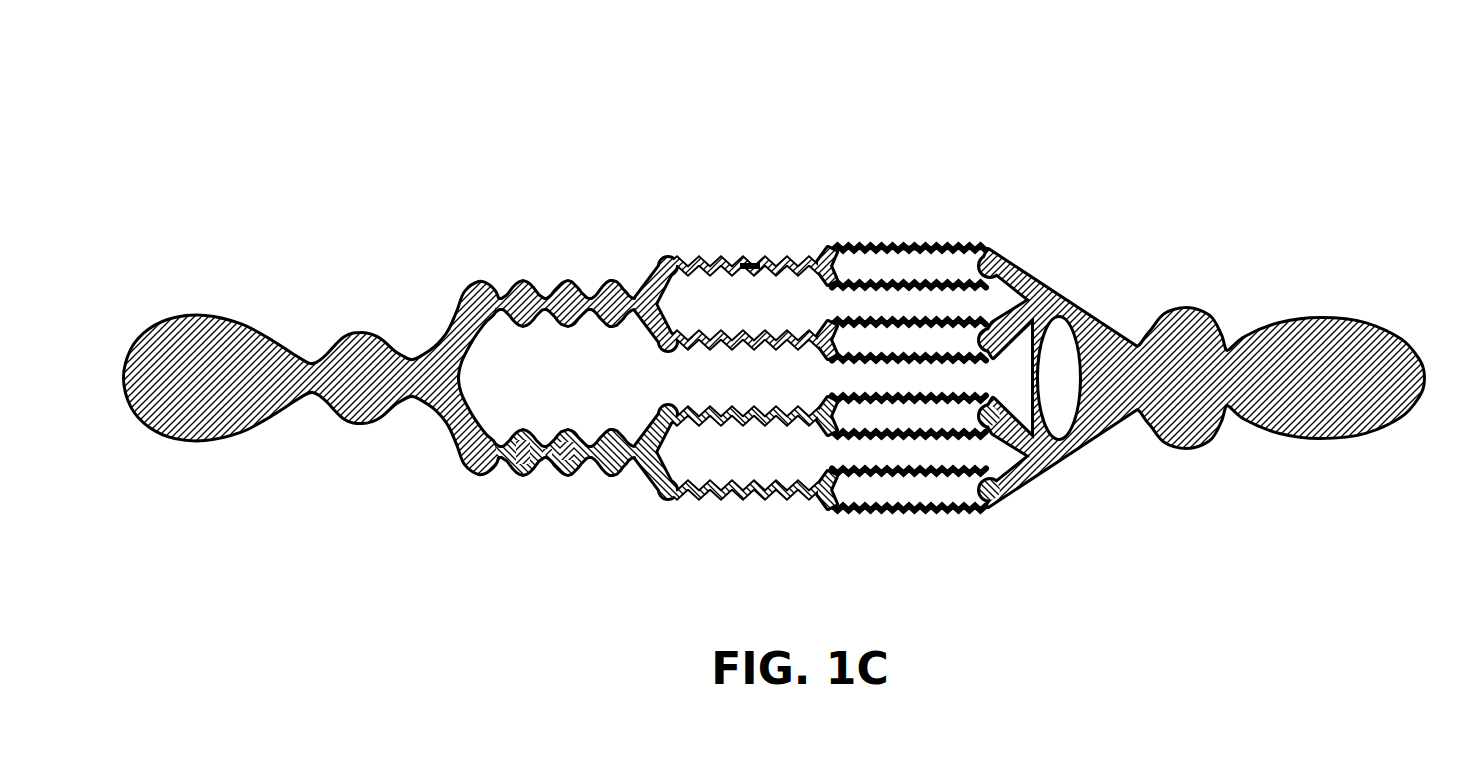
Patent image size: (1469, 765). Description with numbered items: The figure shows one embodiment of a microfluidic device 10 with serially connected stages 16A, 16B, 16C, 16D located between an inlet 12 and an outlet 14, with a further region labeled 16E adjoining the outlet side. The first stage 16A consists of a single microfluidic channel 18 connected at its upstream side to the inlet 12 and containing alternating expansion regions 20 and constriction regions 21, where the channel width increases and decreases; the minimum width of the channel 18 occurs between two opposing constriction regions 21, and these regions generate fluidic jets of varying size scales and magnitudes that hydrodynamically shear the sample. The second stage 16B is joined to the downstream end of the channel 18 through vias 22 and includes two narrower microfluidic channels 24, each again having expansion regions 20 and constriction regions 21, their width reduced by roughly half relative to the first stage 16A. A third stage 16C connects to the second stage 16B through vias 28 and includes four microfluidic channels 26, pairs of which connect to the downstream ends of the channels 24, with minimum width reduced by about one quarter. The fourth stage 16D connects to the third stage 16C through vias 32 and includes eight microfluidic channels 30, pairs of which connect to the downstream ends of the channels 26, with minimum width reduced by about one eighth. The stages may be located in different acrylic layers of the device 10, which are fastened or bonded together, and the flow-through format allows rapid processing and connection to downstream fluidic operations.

The microfluidic device 10 is at (784, 310).
The inlet 12 is at (127, 322).
The outlet 14 is at (1395, 345).
The first stage 16A is at (148, 184).
The second stage 16B is at (483, 184).
The third stage 16C is at (825, 144).
The fourth stage 16D is at (983, 186).
The fifth section 16E is at (983, 209).
The microfluidic channel 18 is at (303, 318).
The expansion region 20 is at (362, 425).
The constriction region 21 is at (315, 395).
The via 22 is at (484, 283).
The microfluidic channel 24 is at (540, 336).
The microfluidic channel 26 is at (720, 258).
The via 28 is at (669, 258).
The microfluidic channel 30 is at (953, 280).
The via 32 is at (829, 250).